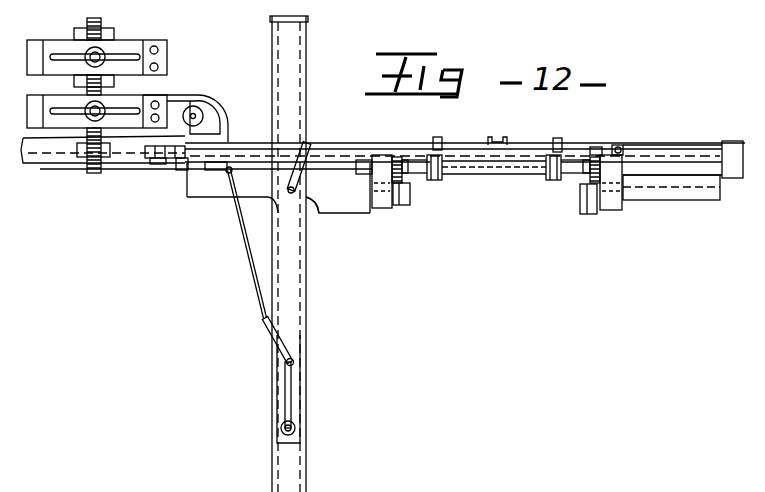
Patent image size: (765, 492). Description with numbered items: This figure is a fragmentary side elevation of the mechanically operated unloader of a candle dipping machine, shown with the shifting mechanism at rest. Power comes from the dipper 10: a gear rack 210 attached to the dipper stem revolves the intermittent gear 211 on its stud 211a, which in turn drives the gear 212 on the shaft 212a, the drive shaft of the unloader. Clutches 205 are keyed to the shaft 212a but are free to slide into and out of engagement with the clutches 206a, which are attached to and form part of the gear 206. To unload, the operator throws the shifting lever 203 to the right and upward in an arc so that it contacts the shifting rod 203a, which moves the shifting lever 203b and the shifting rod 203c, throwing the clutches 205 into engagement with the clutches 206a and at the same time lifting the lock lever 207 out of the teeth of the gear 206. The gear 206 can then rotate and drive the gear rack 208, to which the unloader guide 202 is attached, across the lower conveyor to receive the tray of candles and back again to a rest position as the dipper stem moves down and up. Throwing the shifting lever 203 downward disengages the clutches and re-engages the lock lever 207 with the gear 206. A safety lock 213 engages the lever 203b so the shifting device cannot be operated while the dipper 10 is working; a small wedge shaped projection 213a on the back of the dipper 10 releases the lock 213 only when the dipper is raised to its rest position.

The dipper 10 is at (26, 148).
The unloader guide 202 is at (392, 212).
The shifting lever 203 is at (292, 408).
The shifting rod 203a is at (257, 268).
The shifting lever 203b is at (307, 195).
The shifting rod 203c is at (346, 129).
The clutches 205 is at (562, 180).
The gear 206 is at (372, 176).
The clutches 206a is at (410, 185).
The lock lever 207 is at (442, 140).
The gear rack 208 is at (385, 189).
The gear rack 210 is at (110, 21).
The intermittent gear 211 is at (114, 157).
The stud 211a is at (118, 148).
The gear 212 is at (90, 175).
The shaft 212a is at (216, 168).
The safety lock 213 is at (182, 172).
The wedge shaped projection 213a is at (158, 164).